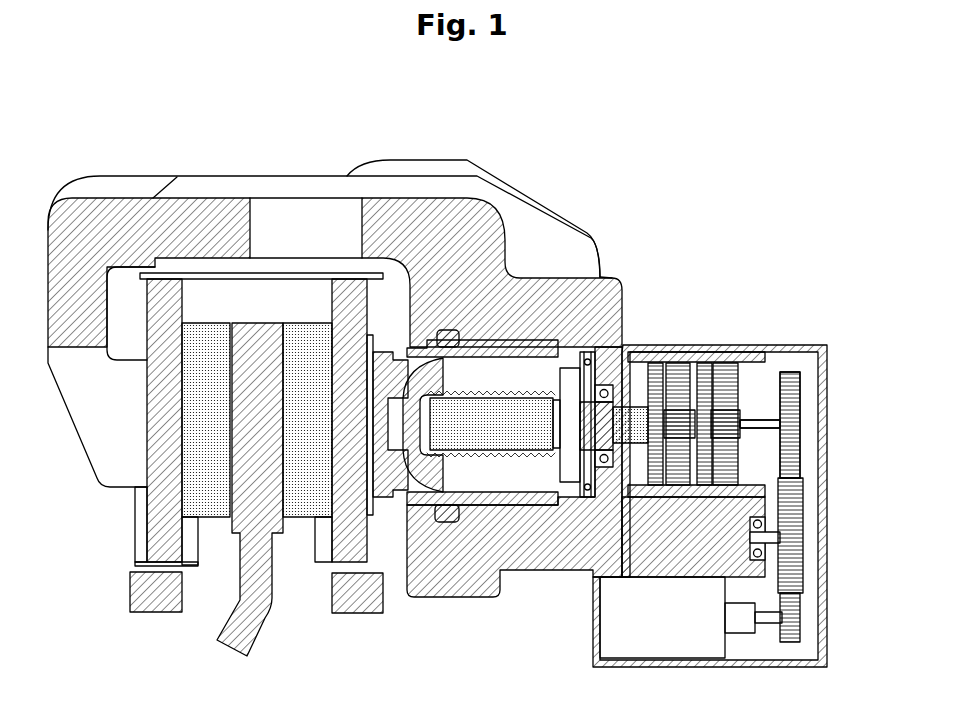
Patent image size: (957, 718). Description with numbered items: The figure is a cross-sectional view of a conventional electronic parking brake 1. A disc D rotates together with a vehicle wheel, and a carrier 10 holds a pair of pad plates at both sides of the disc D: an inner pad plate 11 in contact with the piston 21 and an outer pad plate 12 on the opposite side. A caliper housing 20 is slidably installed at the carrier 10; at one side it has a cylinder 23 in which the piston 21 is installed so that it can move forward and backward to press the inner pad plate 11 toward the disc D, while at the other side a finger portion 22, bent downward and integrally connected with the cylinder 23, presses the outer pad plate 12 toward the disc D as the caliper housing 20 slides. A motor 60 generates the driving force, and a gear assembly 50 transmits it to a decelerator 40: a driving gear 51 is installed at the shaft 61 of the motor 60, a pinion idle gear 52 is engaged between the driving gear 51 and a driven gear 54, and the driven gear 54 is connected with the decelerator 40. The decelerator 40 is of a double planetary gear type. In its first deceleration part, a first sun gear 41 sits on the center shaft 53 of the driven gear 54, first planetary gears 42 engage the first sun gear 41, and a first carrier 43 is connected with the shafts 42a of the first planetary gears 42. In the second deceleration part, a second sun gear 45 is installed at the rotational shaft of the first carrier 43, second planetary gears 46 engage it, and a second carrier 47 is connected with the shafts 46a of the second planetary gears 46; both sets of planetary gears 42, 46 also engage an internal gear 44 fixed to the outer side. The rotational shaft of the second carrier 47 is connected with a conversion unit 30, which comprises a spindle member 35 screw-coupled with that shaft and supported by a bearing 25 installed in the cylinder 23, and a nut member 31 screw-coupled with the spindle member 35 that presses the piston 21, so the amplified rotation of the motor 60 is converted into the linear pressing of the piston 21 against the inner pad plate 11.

The electronic parking brake 1 is at (580, 157).
The carrier 10 is at (148, 603).
The inner pad plate 11 is at (333, 547).
The outer pad plate 12 is at (157, 540).
The disc D is at (252, 627).
The caliper housing 20 is at (432, 158).
The piston 21 is at (388, 505).
The finger portion 22 is at (88, 420).
The cylinder 23 is at (611, 278).
The bearing 25 is at (658, 360).
The conversion unit 30 is at (533, 665).
The nut member 31 is at (427, 510).
The spindle member 35 is at (540, 490).
The decelerator 40 is at (787, 343).
The first sun gear 41 is at (742, 408).
The first planetary gears 42 is at (753, 372).
The shafts of the first planetary gears 42a is at (740, 384).
The first carrier 43 is at (733, 360).
The internal gear 44 is at (690, 497).
The second sun gear 45 is at (657, 487).
The second planetary gears 46 is at (680, 367).
The shafts of the second planetary gears 46a is at (707, 362).
The second carrier 47 is at (657, 363).
The gear assembly 50 is at (812, 499).
The driving gear 51 is at (800, 607).
The pinion idle gear 52 is at (803, 523).
The center shaft 53 is at (793, 440).
The driven gear 54 is at (797, 420).
The motor 60 is at (670, 647).
The shaft 61 is at (766, 624).